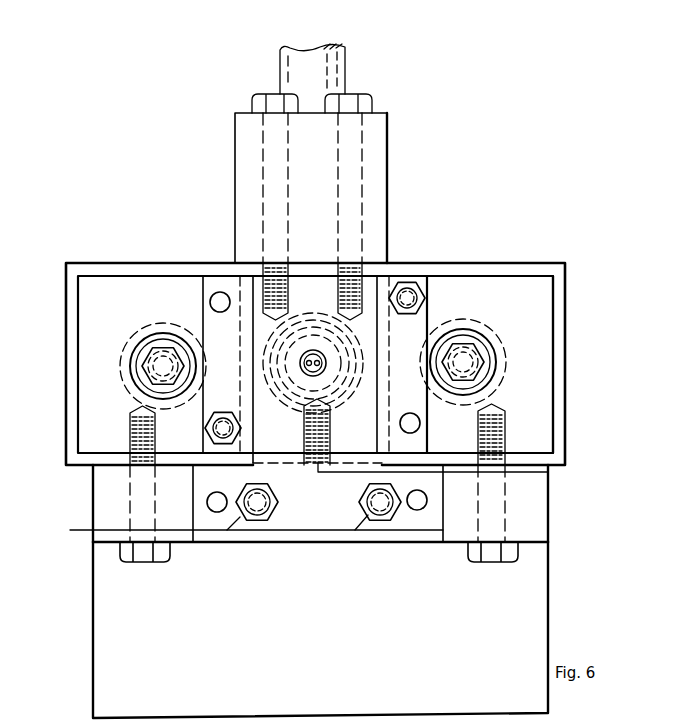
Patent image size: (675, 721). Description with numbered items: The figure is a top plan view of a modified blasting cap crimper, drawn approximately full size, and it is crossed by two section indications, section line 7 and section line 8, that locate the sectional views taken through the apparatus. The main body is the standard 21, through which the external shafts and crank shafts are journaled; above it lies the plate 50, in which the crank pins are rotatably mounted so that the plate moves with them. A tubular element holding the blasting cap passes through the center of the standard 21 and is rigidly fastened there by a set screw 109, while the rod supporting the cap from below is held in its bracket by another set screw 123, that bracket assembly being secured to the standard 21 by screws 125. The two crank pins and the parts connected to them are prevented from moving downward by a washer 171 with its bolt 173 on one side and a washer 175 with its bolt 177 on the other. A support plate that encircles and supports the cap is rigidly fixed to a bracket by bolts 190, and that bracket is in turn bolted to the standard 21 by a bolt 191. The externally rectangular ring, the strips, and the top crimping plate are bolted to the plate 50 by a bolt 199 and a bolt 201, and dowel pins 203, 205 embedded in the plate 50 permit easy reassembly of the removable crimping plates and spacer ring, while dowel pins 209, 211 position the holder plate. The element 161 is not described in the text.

The section line 7- 7 is at (627, 361).
The section line 8- 8 is at (320, 700).
The standard 21 is at (452, 262).
The plate 50 is at (492, 273).
The set screw 109 is at (548, 474).
The set screw 123 is at (392, 184).
The screws 125 is at (252, 99).
The piston rod 161 is at (346, 76).
The washer 171 is at (131, 357).
The bolt 173 is at (163, 346).
The washer 175 is at (496, 354).
The bolt 177 is at (486, 348).
The bolts 190 is at (95, 533).
The bolt 191 is at (118, 558).
The bolt 199 is at (206, 428).
The bolt 201 is at (401, 284).
The dowel pin 203 is at (219, 292).
The dowel pin 205 is at (421, 421).
The dowel pin 209 is at (206, 502).
The dowel pin 211 is at (428, 500).